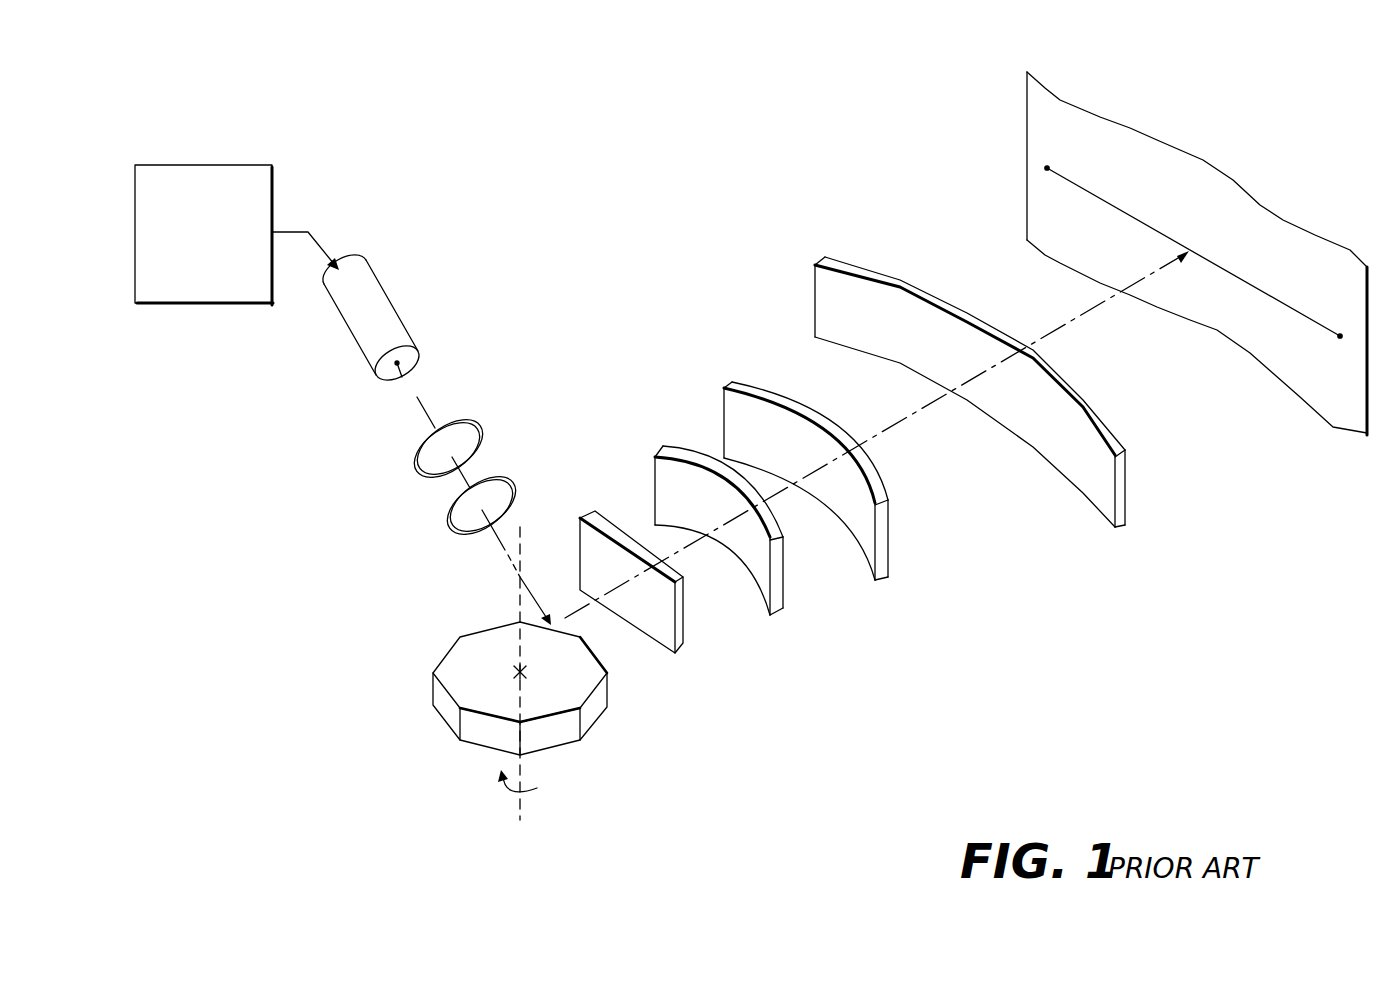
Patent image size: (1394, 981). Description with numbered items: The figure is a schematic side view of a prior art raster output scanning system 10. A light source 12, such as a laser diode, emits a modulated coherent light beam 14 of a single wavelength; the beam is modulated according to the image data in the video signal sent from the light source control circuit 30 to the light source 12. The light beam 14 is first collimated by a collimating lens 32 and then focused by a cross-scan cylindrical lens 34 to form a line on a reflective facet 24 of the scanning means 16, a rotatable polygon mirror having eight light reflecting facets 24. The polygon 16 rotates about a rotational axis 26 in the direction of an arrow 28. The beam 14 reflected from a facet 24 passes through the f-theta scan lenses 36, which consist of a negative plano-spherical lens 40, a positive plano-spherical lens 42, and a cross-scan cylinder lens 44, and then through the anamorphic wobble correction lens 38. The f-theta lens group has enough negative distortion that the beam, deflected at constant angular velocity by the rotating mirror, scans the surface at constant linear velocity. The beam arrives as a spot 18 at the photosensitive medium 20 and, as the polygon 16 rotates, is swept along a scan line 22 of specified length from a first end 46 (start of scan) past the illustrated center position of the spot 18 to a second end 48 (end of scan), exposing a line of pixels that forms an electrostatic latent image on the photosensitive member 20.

The raster output scanning system 10 is at (462, 104).
The light source 12 is at (381, 311).
The light beam 14 is at (413, 383).
The scanning means 16 is at (445, 624).
The spot 18 is at (1185, 252).
The photosensitive medium 20 is at (1062, 102).
The scan line 22 is at (1058, 158).
The light reflecting facets 24 is at (600, 650).
The rotational axis 26 is at (517, 600).
The arrow 28 is at (537, 790).
The light source control circuit 30 is at (233, 304).
The collimating lens 32 is at (428, 462).
The cross-scan cylindrical lens 34 is at (460, 523).
The f-theta scan lenses 36 is at (740, 373).
The anamorphic wobble correction lens 38 is at (1102, 500).
The negative plano-spherical lens 40 is at (680, 650).
The positive plano-spherical lens 42 is at (780, 613).
The cross-scan cylinder lens 44 is at (890, 578).
The first end of the scan line 46 is at (1044, 168).
The second end of the scan line 48 is at (1340, 340).